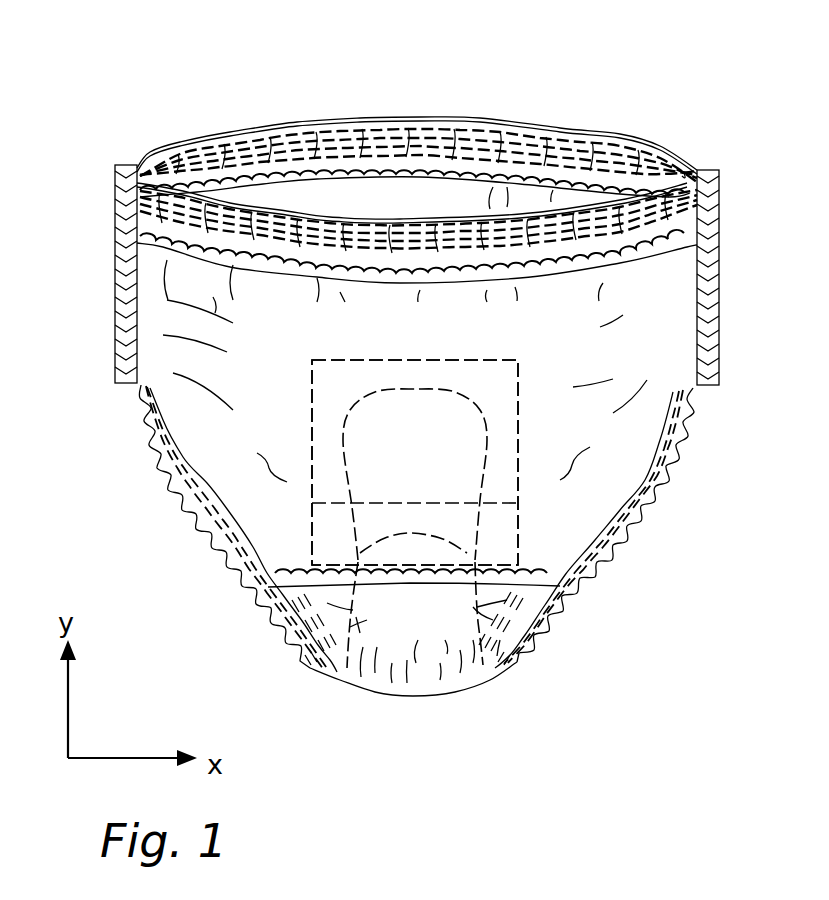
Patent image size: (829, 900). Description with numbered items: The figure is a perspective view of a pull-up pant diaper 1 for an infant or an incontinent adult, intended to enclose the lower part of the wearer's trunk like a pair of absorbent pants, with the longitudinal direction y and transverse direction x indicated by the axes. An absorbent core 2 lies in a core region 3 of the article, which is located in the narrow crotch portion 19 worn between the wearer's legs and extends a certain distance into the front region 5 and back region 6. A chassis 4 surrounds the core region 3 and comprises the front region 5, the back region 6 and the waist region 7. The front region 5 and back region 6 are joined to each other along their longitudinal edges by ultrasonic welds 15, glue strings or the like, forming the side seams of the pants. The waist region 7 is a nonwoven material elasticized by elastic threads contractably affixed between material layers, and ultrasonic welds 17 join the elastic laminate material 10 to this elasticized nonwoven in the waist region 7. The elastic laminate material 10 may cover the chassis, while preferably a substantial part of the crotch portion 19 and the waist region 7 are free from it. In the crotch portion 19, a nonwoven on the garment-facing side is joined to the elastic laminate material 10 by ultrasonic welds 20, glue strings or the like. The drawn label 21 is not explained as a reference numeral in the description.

The pant diaper 1 is at (658, 63).
The absorbent core 2 is at (440, 467).
The core region 3 is at (465, 628).
The chassis 4 is at (642, 307).
The front region 5 is at (322, 347).
The elastic laminate material 10 is at (322, 347).
The back region 6 is at (457, 197).
The waist region 7 is at (262, 140).
The ultrasonic welds 15 is at (130, 251).
The ultrasonic welds 17 is at (700, 258).
The crotch portion 19 is at (345, 660).
The ultrasonic welds 20 is at (265, 605).
The leg elastic threads 21 is at (307, 613).